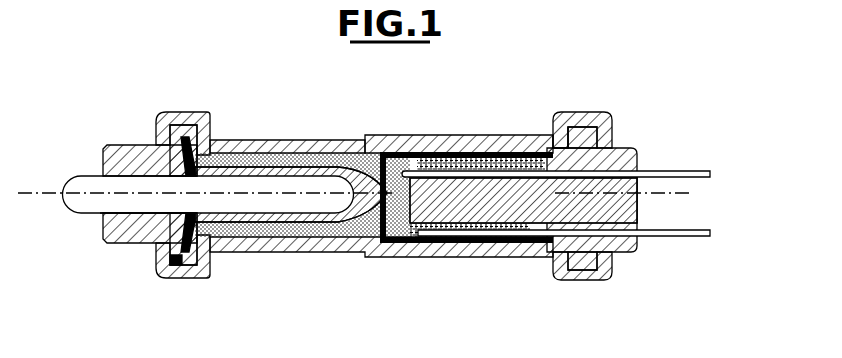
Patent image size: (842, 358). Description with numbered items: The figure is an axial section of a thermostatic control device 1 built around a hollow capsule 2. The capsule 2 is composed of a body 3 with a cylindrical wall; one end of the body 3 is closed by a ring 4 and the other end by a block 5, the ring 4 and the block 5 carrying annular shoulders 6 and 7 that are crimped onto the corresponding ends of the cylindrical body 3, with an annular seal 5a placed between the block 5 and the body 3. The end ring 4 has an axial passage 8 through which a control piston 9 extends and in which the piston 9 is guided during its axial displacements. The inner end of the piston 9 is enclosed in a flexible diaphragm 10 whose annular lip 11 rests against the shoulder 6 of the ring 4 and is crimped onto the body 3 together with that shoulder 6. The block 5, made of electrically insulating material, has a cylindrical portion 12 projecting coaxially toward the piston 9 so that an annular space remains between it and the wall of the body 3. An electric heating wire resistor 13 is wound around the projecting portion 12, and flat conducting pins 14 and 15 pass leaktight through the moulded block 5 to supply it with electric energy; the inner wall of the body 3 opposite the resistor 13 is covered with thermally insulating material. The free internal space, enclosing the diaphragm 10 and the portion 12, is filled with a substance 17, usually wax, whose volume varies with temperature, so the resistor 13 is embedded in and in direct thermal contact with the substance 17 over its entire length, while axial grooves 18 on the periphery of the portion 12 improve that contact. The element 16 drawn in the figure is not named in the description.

The thermostatic control device 1 is at (296, 124).
The hollow capsule 2 is at (326, 255).
The body 3 is at (360, 146).
The ring 4 is at (139, 158).
The block 5 is at (604, 188).
The annular seal 5a is at (562, 148).
The annular shoulder 6 is at (179, 262).
The annular shoulder 7 is at (580, 272).
The axial passage 8 is at (121, 208).
The control piston 9 is at (95, 185).
The flexible diaphragm 10 is at (258, 222).
The annular lip 11 is at (158, 254).
The cylindrical portion 12 is at (433, 190).
The electric heating wire resistor 13 is at (470, 163).
The flat pin 14 is at (698, 177).
The flat pin 15 is at (690, 237).
The metal sleeve 16 is at (427, 245).
The substance 17 is at (366, 230).
The axial grooves 18 is at (489, 246).